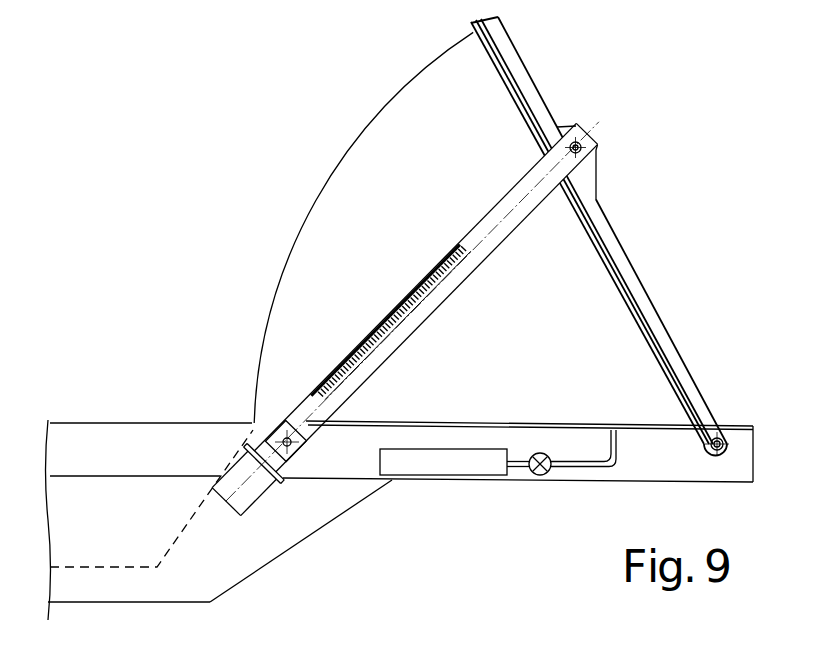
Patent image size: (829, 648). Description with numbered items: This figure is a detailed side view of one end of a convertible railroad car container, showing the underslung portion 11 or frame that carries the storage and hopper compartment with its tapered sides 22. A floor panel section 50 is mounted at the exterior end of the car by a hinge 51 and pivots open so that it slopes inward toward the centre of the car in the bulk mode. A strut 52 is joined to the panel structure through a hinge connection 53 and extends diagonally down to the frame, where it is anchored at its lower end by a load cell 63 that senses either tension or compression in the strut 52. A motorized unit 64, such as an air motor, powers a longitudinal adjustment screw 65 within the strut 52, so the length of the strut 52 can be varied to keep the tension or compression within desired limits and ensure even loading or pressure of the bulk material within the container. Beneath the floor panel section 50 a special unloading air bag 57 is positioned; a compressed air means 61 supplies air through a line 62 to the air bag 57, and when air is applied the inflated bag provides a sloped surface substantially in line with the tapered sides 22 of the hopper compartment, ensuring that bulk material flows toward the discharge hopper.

The underslung portion 11 is at (291, 549).
The tapered sides 22 is at (167, 557).
The floor panel section 50 is at (620, 253).
The hinge 51 is at (727, 432).
The strut 52 is at (503, 236).
The hinge connection 53 is at (290, 459).
The unloading air bag 57 is at (323, 225).
The compressed air means 61 is at (483, 464).
The line 62 is at (617, 452).
The load cell 63 is at (301, 443).
The motorized unit 64 is at (240, 519).
The longitudinal adjustment screw 65 is at (415, 306).